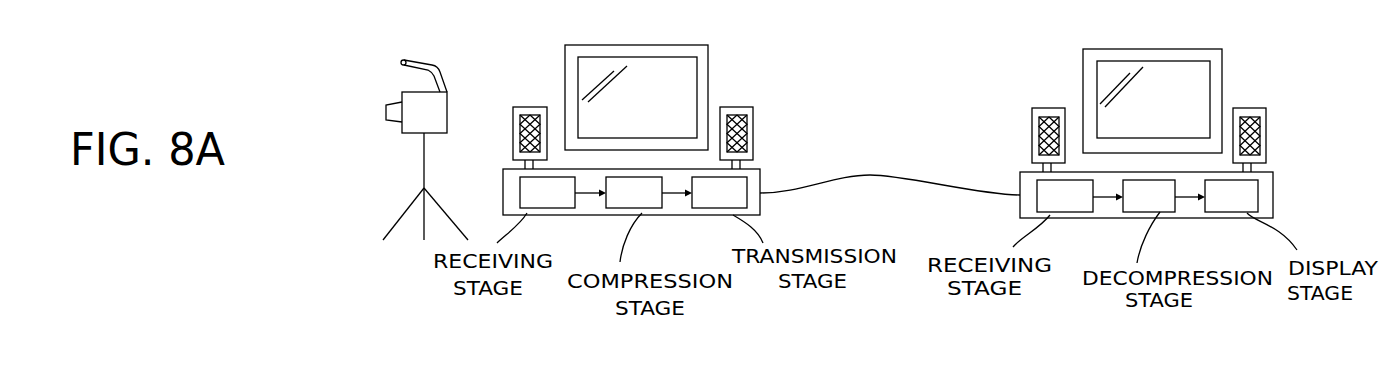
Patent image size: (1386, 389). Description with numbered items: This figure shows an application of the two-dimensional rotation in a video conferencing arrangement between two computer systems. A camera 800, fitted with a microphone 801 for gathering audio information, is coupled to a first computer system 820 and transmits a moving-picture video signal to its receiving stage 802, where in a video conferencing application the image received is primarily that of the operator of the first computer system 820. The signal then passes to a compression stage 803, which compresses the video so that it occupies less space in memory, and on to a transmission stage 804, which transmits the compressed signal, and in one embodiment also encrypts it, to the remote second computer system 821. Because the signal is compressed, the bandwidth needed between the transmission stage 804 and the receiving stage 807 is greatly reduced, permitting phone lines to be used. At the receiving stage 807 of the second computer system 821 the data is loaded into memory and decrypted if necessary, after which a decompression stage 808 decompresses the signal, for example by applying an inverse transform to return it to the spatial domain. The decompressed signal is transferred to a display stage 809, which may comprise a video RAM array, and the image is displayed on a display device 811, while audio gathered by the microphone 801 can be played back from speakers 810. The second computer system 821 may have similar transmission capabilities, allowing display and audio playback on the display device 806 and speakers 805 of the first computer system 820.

The camera 800 is at (398, 139).
The microphone 801 is at (378, 65).
The receiving stage 802 is at (525, 202).
The compression stage 803 is at (612, 202).
The transmission stage 804 is at (697, 202).
The speakers 805 is at (527, 107).
The display device 806 is at (623, 115).
The receiving stage 807 is at (1043, 205).
The decompression stage 808 is at (1127, 205).
The display stage 809 is at (1209, 205).
The speakers 810 is at (1043, 108).
The display device 811 is at (1138, 117).
The first computer system 820 is at (692, 45).
The second computer system 821 is at (1108, 49).